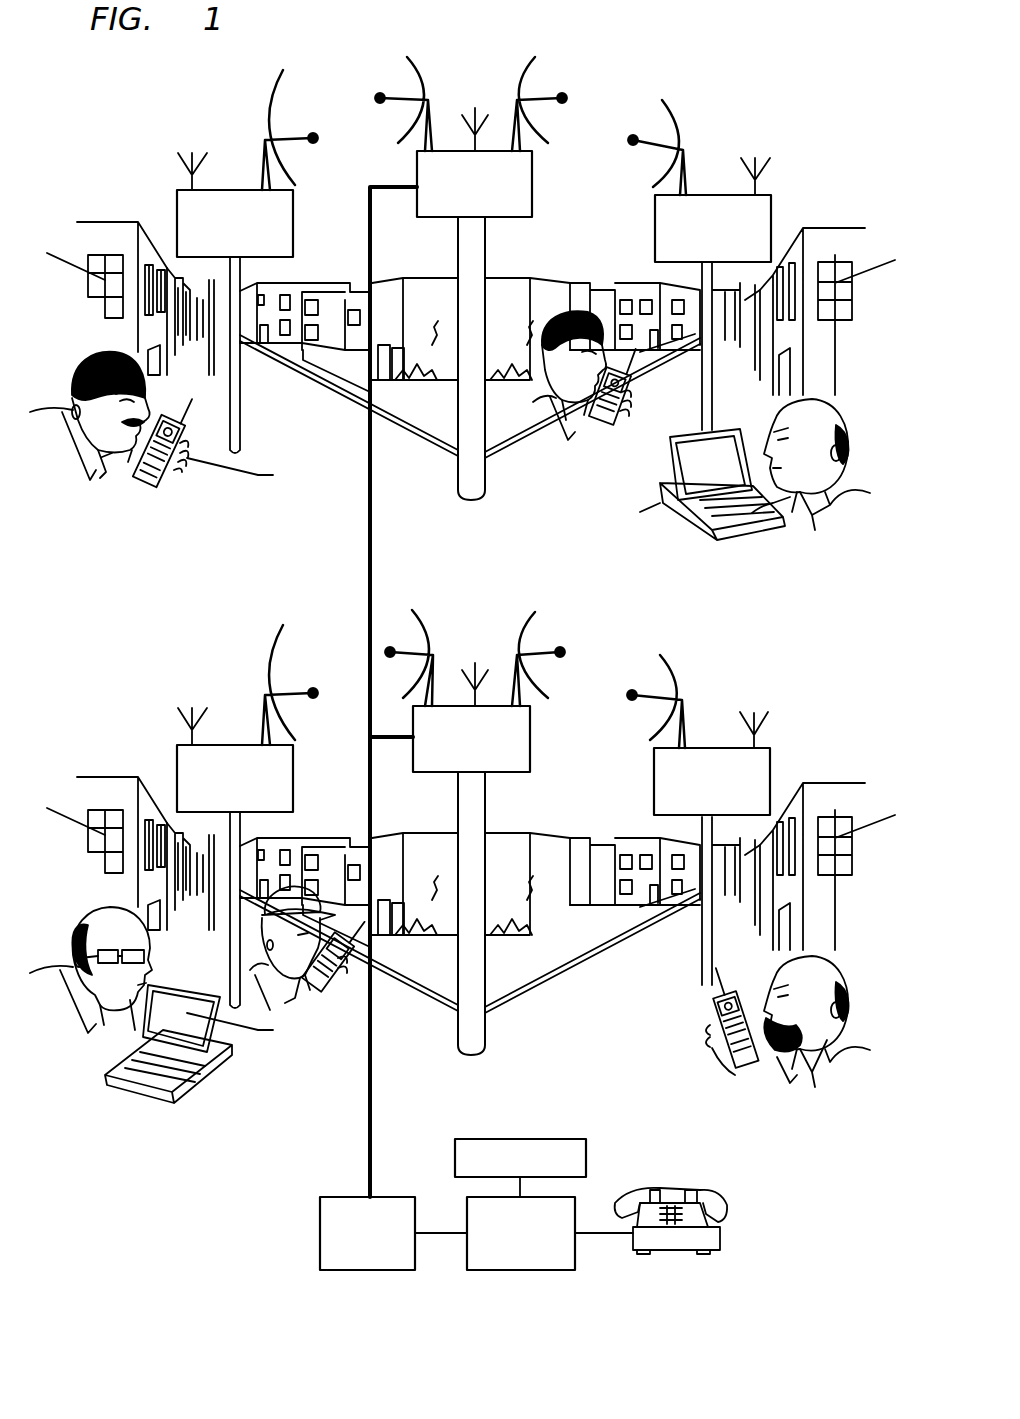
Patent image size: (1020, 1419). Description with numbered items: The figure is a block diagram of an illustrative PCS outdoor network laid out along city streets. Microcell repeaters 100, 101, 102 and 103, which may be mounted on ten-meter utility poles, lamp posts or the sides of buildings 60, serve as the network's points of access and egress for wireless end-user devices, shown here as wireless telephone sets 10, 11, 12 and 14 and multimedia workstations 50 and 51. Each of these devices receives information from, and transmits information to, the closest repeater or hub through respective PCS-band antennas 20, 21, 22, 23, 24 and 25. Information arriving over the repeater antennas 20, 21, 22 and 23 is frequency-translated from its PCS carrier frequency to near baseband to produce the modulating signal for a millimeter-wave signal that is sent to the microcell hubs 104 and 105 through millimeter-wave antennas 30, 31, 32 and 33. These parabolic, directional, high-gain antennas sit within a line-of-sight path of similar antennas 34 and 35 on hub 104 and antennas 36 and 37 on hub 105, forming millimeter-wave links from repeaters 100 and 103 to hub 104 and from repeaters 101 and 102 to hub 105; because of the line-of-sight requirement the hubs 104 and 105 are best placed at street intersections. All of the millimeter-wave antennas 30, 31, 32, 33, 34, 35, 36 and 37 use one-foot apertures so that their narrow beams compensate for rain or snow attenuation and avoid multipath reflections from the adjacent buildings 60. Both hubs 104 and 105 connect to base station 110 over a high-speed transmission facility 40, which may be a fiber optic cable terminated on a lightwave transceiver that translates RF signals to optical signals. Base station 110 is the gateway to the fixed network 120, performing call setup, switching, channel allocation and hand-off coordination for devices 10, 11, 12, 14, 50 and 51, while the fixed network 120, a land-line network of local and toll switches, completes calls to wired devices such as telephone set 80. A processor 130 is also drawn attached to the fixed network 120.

The wireless telephone set 10 is at (153, 487).
The wireless telephone set 11 is at (312, 1000).
The wireless telephone set 12 is at (667, 1003).
The wireless telephone set 14 is at (567, 446).
The PCS-band antenna 20 is at (180, 130).
The PCS-band antenna 21 is at (192, 705).
The PCS-band antenna 22 is at (754, 718).
The PCS-band antenna 23 is at (757, 165).
The PCS-band antenna 24 is at (462, 90).
The PCS-band antenna 25 is at (475, 663).
The millimeter-wave antenna 30 is at (272, 66).
The millimeter-wave antenna 31 is at (283, 652).
The millimeter-wave antenna 32 is at (677, 668).
The millimeter-wave antenna 33 is at (607, 168).
The millimeter-wave antenna 34 is at (366, 57).
The millimeter-wave antenna 35 is at (562, 98).
The millimeter-wave antenna 36 is at (428, 605).
The millimeter-wave antenna 37 is at (560, 652).
The high-speed transmission facility 40 is at (370, 1092).
The multimedia workstation 50 is at (145, 1090).
The multimedia workstation 51 is at (617, 513).
The building 60 is at (100, 228).
The telephone set 80 is at (727, 1205).
The microcell repeater 100 is at (235, 190).
The microcell repeater 101 is at (235, 745).
The microcell repeater 102 is at (612, 796).
The microcell repeater 103 is at (620, 232).
The microcell hub 104 is at (425, 245).
The microcell hub 105 is at (532, 750).
The base station 110 is at (276, 1234).
The fixed network 120 is at (545, 1272).
The processor 130 is at (548, 1138).